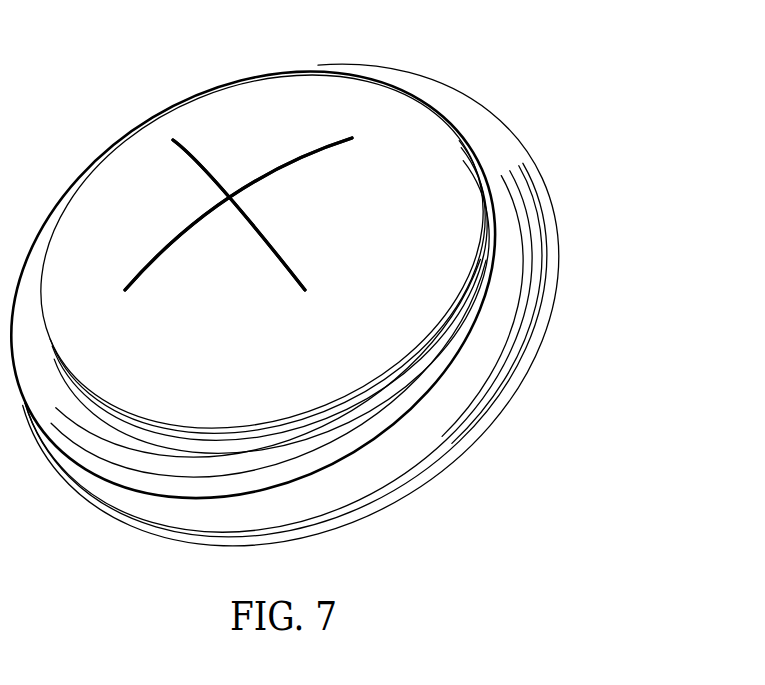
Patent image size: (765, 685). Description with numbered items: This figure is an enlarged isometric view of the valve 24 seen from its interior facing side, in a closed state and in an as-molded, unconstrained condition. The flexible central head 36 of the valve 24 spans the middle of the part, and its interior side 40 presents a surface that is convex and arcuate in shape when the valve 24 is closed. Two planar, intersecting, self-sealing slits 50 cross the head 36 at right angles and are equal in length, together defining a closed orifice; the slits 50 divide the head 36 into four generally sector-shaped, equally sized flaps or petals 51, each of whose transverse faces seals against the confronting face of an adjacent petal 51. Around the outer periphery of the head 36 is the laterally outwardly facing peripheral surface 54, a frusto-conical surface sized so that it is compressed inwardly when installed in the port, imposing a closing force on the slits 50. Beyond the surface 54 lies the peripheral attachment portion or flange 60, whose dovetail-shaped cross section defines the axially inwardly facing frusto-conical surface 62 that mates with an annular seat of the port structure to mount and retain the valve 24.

The valve 24 is at (540, 66).
The head 36 is at (348, 86).
The interior side 40 is at (397, 108).
The slits 50 is at (183, 146).
The petals 51 is at (240, 163).
The peripheral surface 54 is at (395, 382).
The flange 60 is at (536, 296).
The frusto-conical surface 62 is at (490, 140).